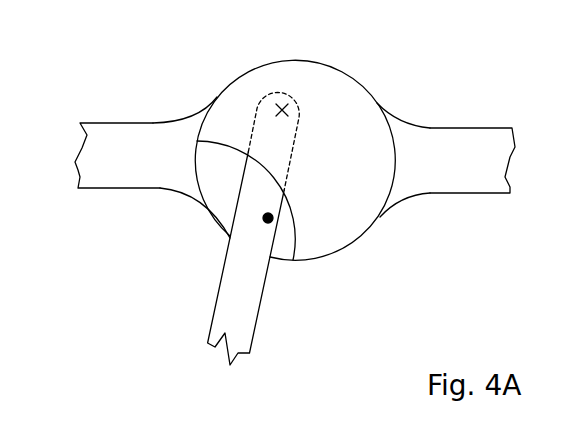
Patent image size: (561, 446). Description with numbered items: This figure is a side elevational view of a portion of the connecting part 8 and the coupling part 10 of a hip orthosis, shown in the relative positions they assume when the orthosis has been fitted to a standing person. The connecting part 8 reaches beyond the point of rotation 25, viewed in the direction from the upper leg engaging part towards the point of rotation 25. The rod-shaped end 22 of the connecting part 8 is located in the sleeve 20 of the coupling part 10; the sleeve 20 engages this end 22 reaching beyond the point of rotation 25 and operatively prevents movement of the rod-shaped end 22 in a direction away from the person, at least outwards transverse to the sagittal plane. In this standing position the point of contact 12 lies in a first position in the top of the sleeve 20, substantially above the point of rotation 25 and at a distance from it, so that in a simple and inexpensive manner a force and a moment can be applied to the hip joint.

The coupling part 10 is at (376, 97).
The sleeve 20 is at (332, 108).
The connecting part 8 is at (215, 305).
The end 22 is at (273, 137).
The point of contact 12 is at (282, 105).
The point of rotation 25 is at (264, 221).